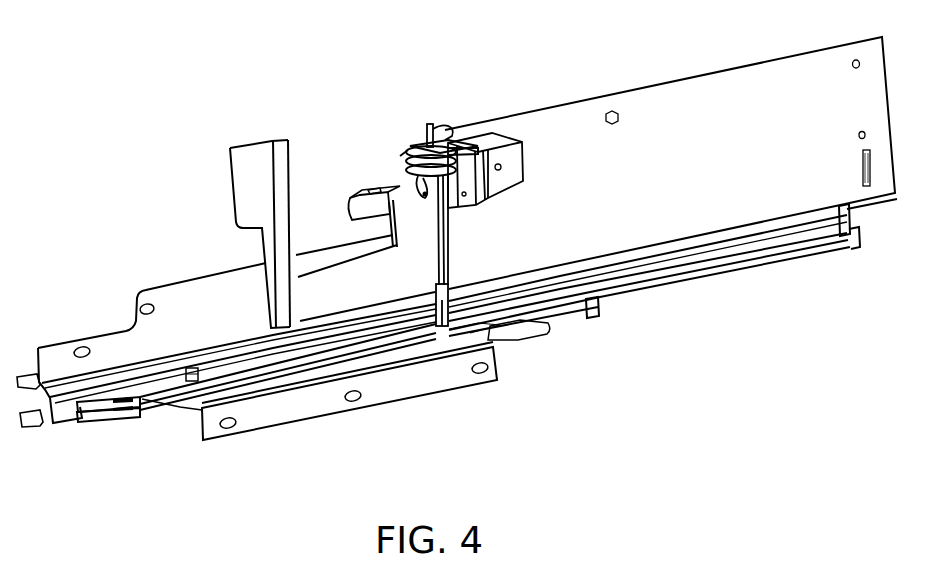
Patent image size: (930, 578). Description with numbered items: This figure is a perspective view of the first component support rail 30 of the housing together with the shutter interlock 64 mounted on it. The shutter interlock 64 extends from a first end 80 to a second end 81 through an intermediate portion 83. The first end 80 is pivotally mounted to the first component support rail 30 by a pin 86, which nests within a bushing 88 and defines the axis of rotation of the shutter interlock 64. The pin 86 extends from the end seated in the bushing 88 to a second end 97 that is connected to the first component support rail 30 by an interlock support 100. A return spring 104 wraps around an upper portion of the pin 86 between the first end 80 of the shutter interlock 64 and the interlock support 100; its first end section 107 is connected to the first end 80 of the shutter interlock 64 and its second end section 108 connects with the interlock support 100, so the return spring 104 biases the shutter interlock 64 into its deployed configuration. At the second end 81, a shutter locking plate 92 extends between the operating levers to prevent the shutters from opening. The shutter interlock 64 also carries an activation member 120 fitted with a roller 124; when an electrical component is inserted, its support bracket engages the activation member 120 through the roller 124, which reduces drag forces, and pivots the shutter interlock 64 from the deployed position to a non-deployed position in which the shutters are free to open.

The first component support rail 30 is at (800, 185).
The shutter interlock 64 is at (346, 345).
The first end 80 is at (449, 245).
The second end 81 is at (276, 284).
The intermediate portion 83 is at (348, 295).
The pin 86 is at (418, 132).
The bushing 88 is at (498, 334).
The shutter locking plate 92 is at (247, 190).
The second end 97 is at (433, 124).
The interlock support 100 is at (495, 196).
The return spring 104 is at (389, 150).
The first end section 107 is at (424, 200).
The second end section 108 is at (450, 128).
The activation member 120 is at (383, 186).
The roller 124 is at (350, 210).